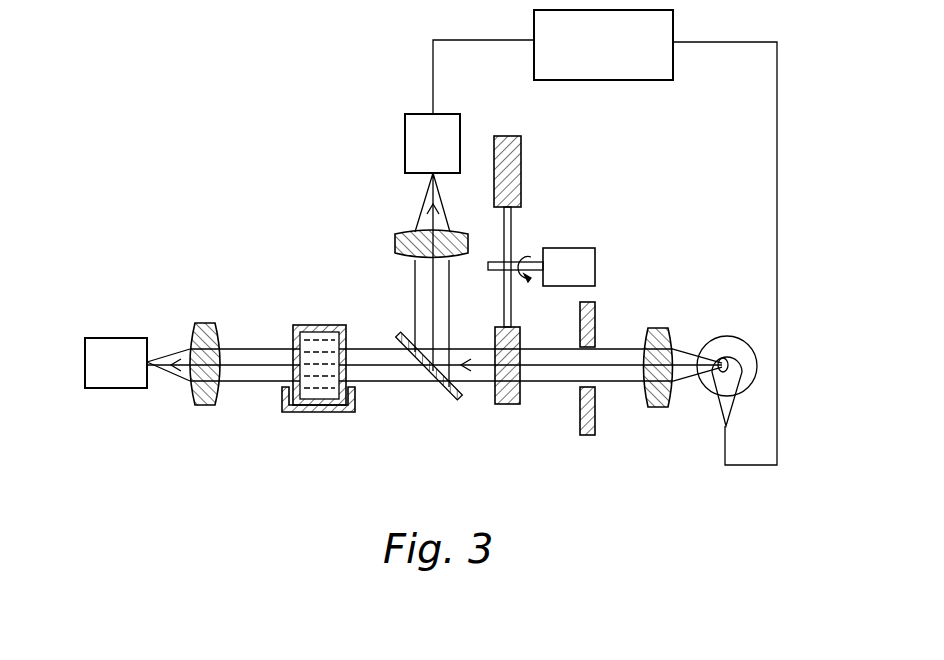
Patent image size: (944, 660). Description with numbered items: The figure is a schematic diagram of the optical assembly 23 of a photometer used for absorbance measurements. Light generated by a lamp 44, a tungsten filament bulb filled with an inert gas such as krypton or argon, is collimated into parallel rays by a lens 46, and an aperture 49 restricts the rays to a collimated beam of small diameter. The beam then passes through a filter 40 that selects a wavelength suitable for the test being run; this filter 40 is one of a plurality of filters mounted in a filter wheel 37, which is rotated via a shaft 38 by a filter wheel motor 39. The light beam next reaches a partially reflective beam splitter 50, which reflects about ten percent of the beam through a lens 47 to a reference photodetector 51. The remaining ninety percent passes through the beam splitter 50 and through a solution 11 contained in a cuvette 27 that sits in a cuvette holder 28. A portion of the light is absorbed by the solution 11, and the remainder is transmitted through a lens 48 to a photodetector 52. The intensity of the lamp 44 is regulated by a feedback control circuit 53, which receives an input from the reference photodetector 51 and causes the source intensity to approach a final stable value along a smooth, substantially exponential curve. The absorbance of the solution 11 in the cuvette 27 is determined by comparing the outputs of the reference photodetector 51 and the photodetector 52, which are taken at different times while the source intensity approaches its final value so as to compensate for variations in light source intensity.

The optical assembly 23 is at (296, 205).
The feedback control circuit 53 is at (618, 60).
The reference photodetector 51 is at (405, 138).
The lens 47 is at (395, 243).
The filter wheel 37 is at (527, 169).
The shaft 38 is at (517, 258).
The filter wheel motor 39 is at (578, 252).
The filter 40 is at (521, 337).
The aperture 49 is at (596, 327).
The lens 46 is at (660, 328).
The lamp 44 is at (727, 336).
The beam splitter 50 is at (433, 391).
The photodetector 52 is at (116, 342).
The lens 48 is at (208, 323).
The cuvette 27 is at (326, 327).
The solution 11 is at (312, 340).
The cuvette holder 28 is at (325, 412).